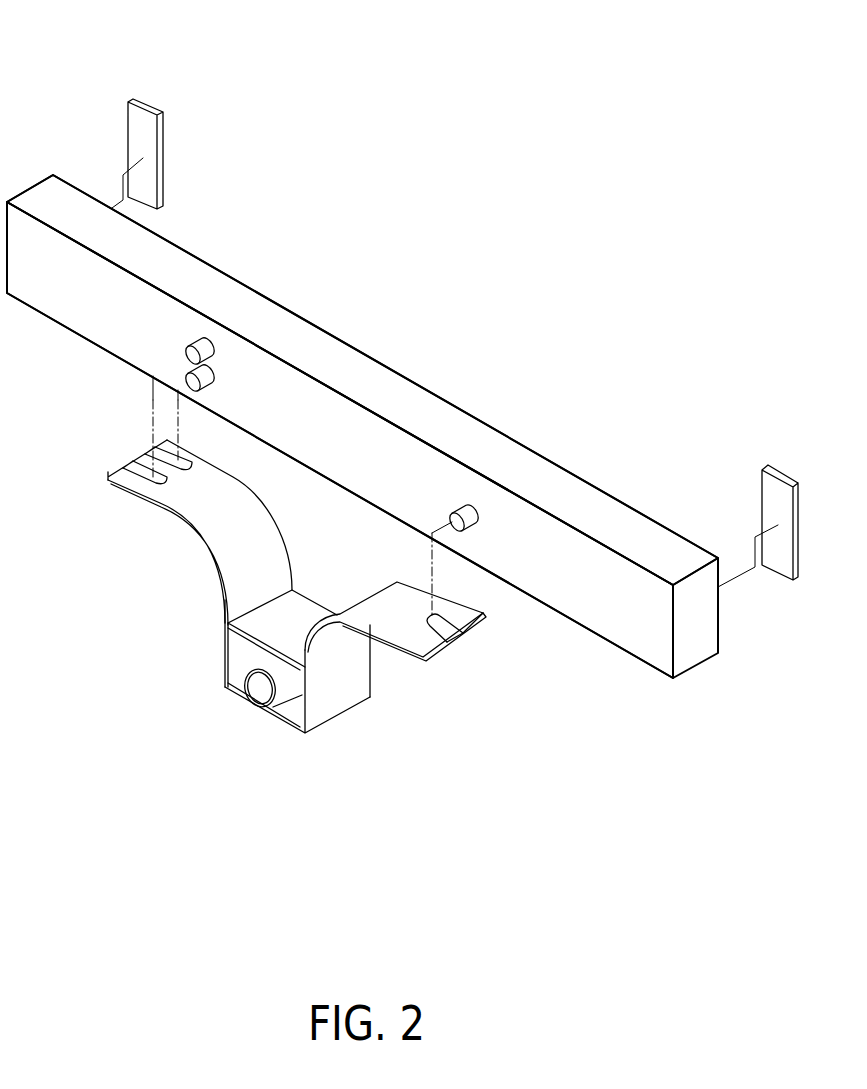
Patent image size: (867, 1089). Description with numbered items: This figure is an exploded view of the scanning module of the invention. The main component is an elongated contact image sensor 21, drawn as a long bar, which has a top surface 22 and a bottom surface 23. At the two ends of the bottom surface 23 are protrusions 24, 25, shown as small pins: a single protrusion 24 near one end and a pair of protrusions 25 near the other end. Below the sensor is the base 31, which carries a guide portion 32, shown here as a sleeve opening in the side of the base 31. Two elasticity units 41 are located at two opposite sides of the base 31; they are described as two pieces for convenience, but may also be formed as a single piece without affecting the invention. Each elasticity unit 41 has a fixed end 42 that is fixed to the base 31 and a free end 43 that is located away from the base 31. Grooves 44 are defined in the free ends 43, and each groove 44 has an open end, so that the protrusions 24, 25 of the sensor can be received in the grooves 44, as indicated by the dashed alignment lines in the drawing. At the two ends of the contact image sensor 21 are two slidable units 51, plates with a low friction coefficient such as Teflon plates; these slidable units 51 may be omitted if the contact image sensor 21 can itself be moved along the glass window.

The contact image sensor 21 is at (380, 378).
The top surface 22 is at (533, 453).
The bottom surface 23 is at (310, 453).
The protrusion 24 is at (477, 527).
The protrusions 25 is at (188, 380).
The base 31 is at (303, 610).
The guide portion 32 is at (285, 690).
The elasticity unit 41 is at (208, 535).
The fixed end 42 is at (225, 650).
The free end 43 is at (193, 452).
The groove 44 is at (168, 452).
The slidable unit 51 is at (140, 138).